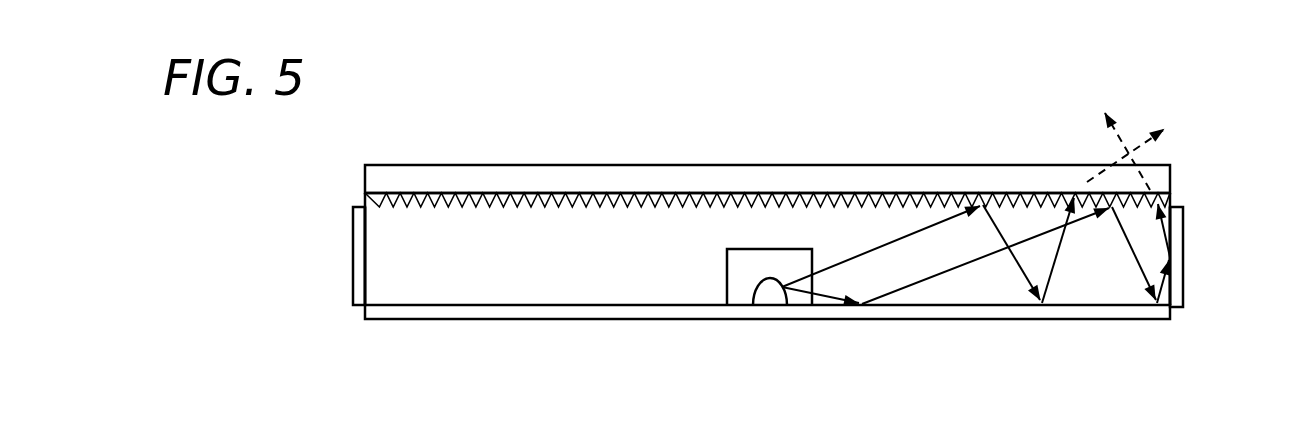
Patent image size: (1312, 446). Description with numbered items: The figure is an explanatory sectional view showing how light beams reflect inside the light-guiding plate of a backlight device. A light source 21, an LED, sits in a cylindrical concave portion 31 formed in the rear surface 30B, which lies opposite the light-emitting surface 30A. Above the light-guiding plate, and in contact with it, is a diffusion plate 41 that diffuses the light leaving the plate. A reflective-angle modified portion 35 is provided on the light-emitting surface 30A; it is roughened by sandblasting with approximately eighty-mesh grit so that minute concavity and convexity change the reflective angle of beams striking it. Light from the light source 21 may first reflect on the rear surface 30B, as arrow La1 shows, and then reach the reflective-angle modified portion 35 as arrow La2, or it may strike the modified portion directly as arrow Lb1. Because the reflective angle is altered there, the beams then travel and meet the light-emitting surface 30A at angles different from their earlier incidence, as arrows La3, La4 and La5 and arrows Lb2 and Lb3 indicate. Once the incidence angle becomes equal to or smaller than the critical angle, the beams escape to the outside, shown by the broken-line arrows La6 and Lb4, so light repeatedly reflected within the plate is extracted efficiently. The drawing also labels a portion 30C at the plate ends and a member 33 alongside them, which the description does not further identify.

The light source 21 is at (768, 292).
The light-emitting surface 30A is at (492, 193).
The rear surface 30B is at (575, 320).
The end surface (side surface) of light guide plate 30C is at (353, 275).
The cylindrical concave portion 31 is at (733, 282).
The reflection member (frame) 33 is at (358, 240).
The reflective-angle modified portion 35 is at (668, 205).
The diffusion plate 41 is at (1172, 178).
The arrow La1 is at (832, 300).
The arrow La2 is at (957, 266).
The arrow La3 is at (1133, 262).
The arrow La4 is at (1162, 290).
The arrow La5 is at (1168, 226).
The arrow La6 is at (1130, 137).
The arrow Lb1 is at (893, 240).
The arrow Lb2 is at (1005, 245).
The arrow Lb3 is at (1050, 283).
The arrow Lb4 is at (1087, 180).